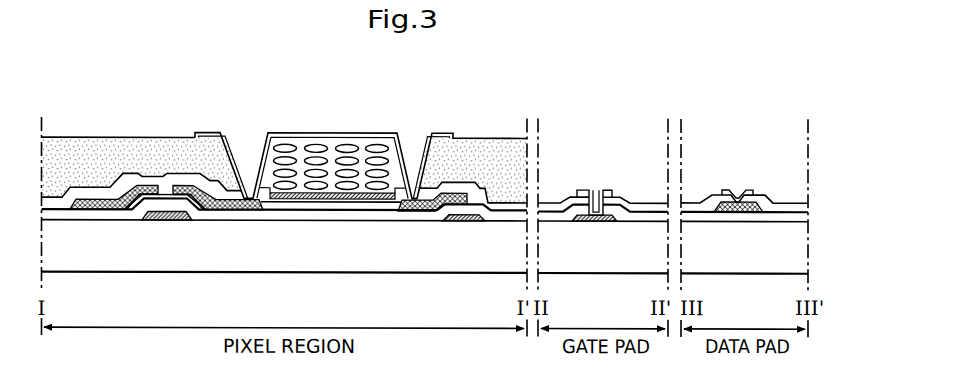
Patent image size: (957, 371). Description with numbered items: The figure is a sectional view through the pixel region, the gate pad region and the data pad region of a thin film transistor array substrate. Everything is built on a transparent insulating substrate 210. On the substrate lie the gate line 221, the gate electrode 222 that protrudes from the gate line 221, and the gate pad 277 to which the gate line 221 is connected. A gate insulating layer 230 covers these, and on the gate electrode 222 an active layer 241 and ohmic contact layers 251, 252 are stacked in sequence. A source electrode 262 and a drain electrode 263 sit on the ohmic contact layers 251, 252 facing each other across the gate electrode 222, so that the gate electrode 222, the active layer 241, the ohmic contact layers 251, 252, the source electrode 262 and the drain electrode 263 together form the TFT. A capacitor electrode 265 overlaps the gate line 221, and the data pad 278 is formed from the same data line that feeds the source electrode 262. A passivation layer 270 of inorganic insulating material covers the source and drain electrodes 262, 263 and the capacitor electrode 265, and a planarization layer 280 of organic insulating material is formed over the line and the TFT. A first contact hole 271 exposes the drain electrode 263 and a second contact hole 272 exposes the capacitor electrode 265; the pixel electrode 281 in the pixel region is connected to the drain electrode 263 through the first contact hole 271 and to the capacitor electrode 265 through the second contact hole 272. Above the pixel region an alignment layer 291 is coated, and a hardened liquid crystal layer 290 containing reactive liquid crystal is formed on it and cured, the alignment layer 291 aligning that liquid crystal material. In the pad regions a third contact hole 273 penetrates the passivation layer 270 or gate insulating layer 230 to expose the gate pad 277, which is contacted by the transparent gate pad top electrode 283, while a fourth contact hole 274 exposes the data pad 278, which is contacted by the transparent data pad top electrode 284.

The transparent insulating substrate 210 is at (240, 264).
The gate line 221 is at (453, 218).
The gate electrode 222 is at (162, 215).
The gate insulating layer 230 is at (277, 213).
The active layer 241 is at (164, 195).
The ohmic contact layer 251 is at (127, 212).
The ohmic contact layer 252 is at (200, 212).
The source electrode 262 is at (140, 182).
The drain electrode 263 is at (197, 186).
The capacitor electrode 265 is at (450, 193).
The passivation layer 270 is at (470, 185).
The first contact hole 271 is at (245, 146).
The second contact hole 272 is at (413, 158).
The third contact hole 273 is at (588, 186).
The fourth contact hole 274 is at (733, 185).
The gate pad 277 is at (597, 219).
The data pad 278 is at (740, 210).
The planarization layer 280 is at (67, 143).
The pixel electrode 281 is at (363, 131).
The gate pad top electrode 283 is at (601, 190).
The data pad top electrode 284 is at (750, 191).
The hardened liquid crystal layer 290 is at (283, 142).
The alignment layer 291 is at (328, 192).